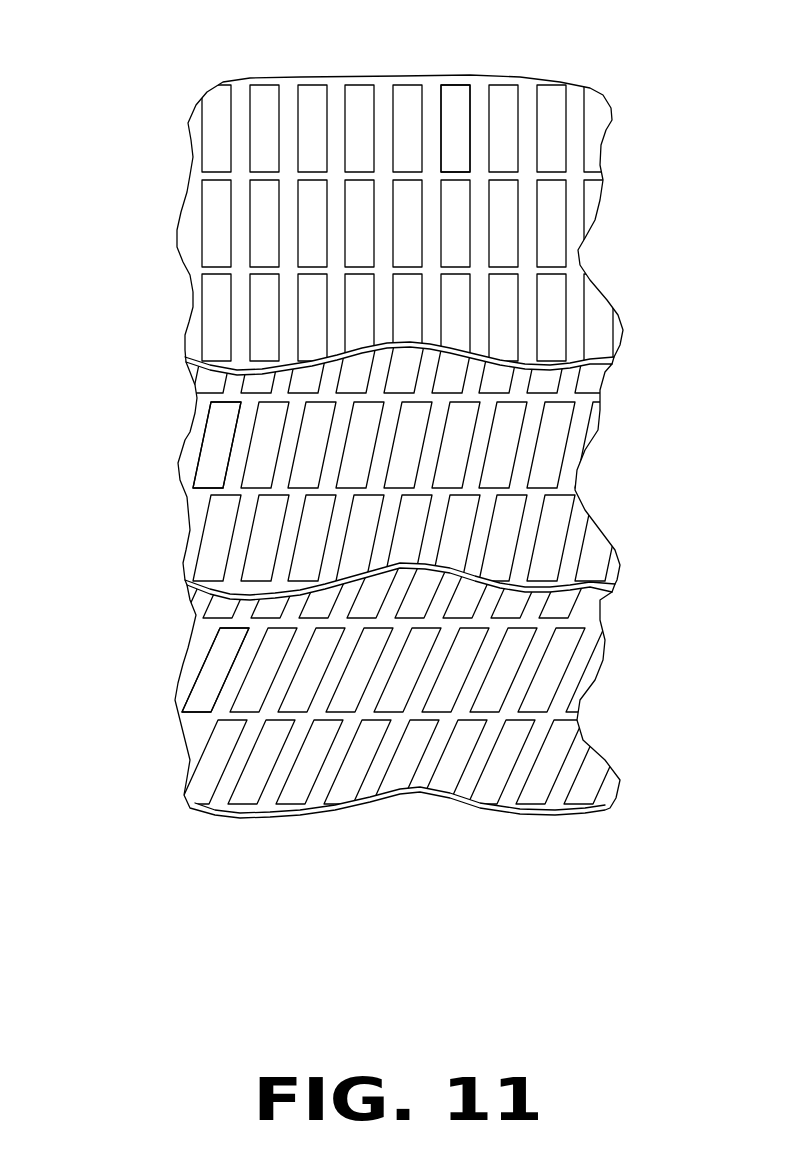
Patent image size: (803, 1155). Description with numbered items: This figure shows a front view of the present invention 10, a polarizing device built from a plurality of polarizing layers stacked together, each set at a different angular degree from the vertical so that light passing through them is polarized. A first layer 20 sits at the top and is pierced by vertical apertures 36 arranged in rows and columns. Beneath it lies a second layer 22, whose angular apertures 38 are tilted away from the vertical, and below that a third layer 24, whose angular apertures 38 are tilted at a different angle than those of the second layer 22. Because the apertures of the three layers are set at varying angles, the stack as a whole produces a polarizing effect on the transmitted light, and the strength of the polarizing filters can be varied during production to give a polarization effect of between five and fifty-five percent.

The present invention 10 is at (122, 82).
The first layer 20 is at (603, 180).
The second layer 22 is at (612, 412).
The third layer 24 is at (582, 727).
The vertical apertures 36 is at (458, 125).
The angular apertures 38 is at (217, 460).